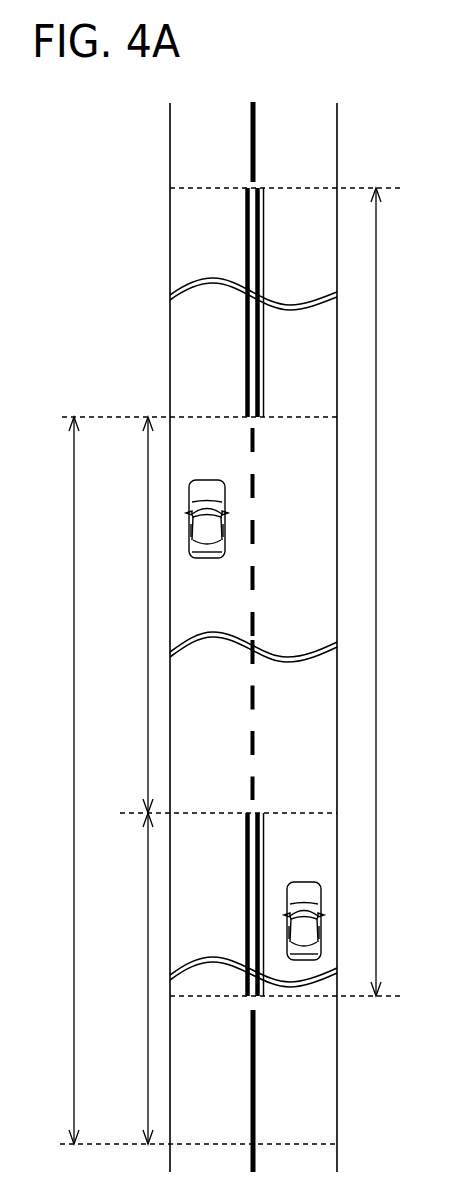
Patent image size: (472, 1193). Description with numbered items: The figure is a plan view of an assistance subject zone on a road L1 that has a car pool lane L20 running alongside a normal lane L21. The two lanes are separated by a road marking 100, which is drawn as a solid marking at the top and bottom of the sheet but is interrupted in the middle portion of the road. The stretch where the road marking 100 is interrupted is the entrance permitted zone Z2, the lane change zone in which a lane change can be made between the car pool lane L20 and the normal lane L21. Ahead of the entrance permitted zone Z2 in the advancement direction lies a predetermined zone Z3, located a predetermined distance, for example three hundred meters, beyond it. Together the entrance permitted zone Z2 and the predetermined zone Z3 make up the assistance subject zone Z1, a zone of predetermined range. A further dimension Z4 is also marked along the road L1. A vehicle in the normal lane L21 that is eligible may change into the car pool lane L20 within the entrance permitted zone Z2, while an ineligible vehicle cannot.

The road L1 is at (170, 153).
The car pool lane L20 is at (236, 240).
The normal lane L21 is at (327, 240).
The road marking 100 is at (263, 378).
The assistance subject zone Z1 is at (55, 780).
The entrance permitted zone Z2 is at (130, 615).
The predetermined zone Z3 is at (130, 978).
The zone Z4 is at (390, 592).